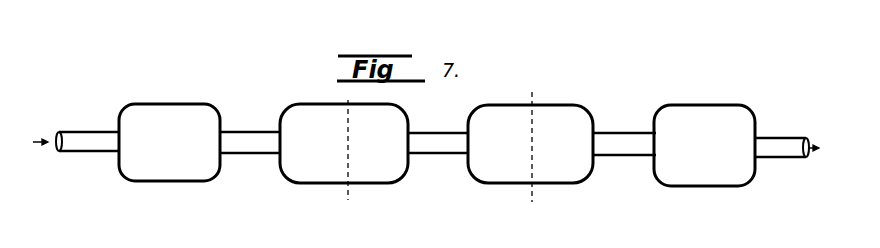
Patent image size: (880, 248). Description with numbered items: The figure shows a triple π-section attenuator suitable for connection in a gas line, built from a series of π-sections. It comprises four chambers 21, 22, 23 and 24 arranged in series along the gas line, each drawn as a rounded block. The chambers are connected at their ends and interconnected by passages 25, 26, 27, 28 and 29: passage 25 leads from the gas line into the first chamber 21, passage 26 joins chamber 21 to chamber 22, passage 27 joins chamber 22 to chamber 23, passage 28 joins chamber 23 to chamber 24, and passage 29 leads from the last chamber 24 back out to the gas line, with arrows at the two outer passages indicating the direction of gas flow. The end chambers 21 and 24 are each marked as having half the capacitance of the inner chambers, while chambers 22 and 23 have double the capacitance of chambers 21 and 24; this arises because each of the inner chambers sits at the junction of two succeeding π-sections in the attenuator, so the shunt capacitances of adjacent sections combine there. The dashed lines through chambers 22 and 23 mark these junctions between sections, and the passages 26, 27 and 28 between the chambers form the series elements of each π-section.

The chamber 21 is at (158, 182).
The chamber 22 is at (337, 184).
The chamber 23 is at (528, 185).
The chamber 24 is at (693, 187).
The passage 25 is at (90, 153).
The passage 26 is at (253, 155).
The passage 27 is at (438, 155).
The passage 28 is at (632, 157).
The passage 29 is at (783, 159).